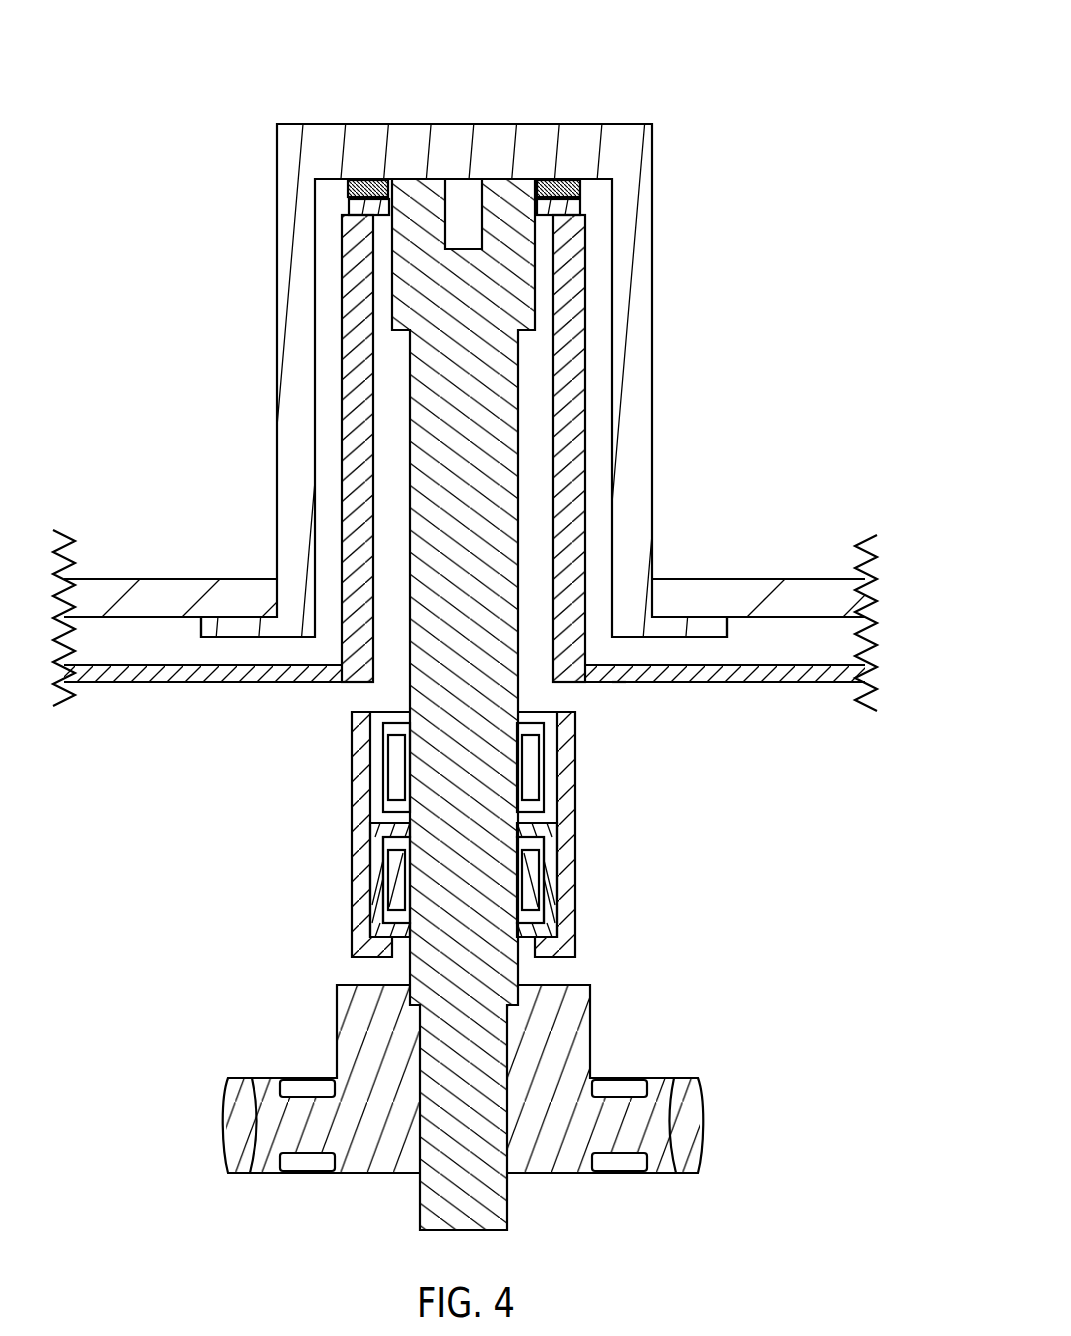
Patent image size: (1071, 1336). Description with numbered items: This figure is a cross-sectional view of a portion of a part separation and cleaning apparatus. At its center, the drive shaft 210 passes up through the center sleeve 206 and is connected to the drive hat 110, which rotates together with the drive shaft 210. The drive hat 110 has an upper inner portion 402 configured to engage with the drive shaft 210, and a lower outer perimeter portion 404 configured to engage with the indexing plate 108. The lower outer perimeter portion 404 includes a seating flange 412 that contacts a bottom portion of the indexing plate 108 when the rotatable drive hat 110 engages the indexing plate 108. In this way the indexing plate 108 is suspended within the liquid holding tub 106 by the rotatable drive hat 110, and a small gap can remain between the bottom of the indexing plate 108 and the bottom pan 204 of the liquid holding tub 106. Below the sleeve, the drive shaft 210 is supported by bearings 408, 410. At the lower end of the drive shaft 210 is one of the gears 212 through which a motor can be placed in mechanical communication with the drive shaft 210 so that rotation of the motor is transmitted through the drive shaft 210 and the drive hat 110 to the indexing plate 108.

The upper inner portion 402 is at (577, 98).
The drive hat 110 is at (615, 143).
The center sleeve 206 is at (570, 315).
The drive shaft 210 is at (497, 437).
The lower outer perimeter portion 404 is at (672, 605).
The indexing plate 108 is at (798, 592).
The liquid holding tub 106 is at (678, 685).
The bottom pan 204 is at (618, 682).
The seating flange 412 is at (712, 628).
The bearing 408 is at (395, 772).
The bearing 410 is at (390, 880).
The gear 212 is at (632, 1118).